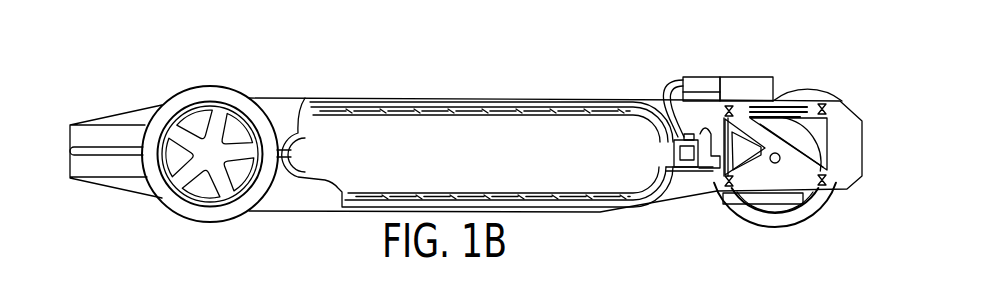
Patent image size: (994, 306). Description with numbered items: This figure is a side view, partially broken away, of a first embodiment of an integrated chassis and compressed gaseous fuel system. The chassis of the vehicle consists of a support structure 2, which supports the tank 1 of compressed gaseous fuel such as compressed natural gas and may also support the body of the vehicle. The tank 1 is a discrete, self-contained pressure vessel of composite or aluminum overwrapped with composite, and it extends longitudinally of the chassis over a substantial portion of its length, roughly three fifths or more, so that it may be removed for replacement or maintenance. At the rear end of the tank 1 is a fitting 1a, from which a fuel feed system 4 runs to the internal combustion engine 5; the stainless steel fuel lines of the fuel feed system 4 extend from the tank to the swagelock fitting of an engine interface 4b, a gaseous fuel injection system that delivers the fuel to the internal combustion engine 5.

The tank of compressed gaseous fuel 1 is at (488, 105).
The battery connector 1a is at (690, 170).
The support structure 2 is at (103, 112).
The fuel feed system 4 is at (663, 77).
The engine interface 4b is at (701, 70).
The internal combustion engine 5 is at (768, 85).